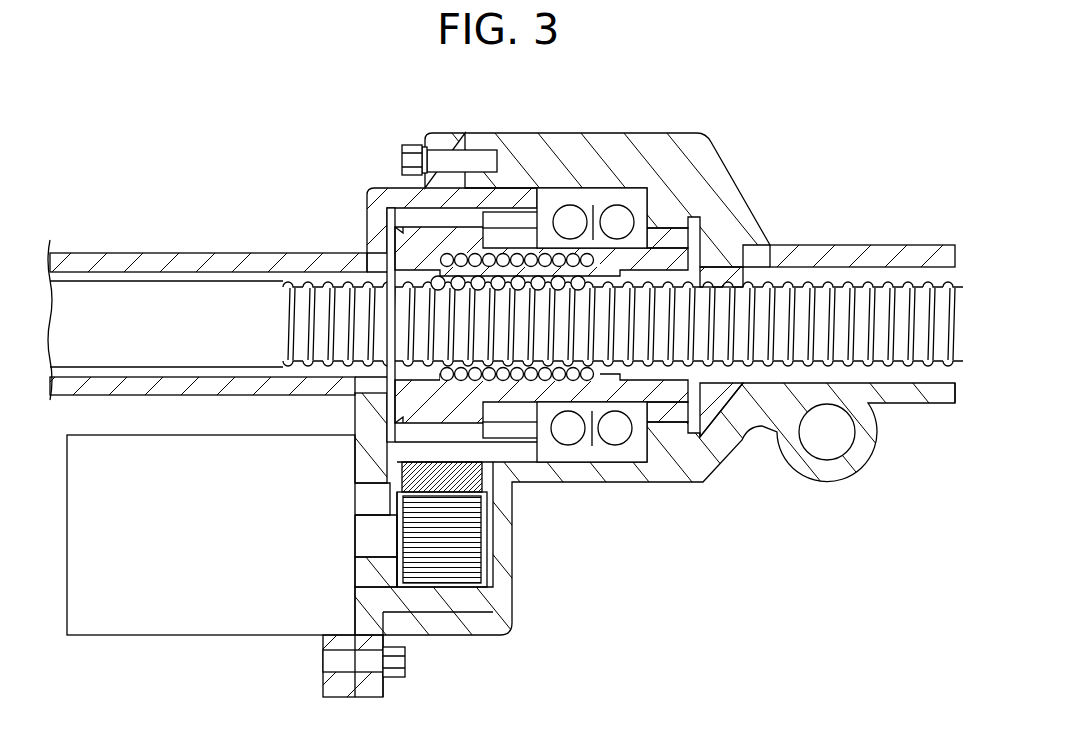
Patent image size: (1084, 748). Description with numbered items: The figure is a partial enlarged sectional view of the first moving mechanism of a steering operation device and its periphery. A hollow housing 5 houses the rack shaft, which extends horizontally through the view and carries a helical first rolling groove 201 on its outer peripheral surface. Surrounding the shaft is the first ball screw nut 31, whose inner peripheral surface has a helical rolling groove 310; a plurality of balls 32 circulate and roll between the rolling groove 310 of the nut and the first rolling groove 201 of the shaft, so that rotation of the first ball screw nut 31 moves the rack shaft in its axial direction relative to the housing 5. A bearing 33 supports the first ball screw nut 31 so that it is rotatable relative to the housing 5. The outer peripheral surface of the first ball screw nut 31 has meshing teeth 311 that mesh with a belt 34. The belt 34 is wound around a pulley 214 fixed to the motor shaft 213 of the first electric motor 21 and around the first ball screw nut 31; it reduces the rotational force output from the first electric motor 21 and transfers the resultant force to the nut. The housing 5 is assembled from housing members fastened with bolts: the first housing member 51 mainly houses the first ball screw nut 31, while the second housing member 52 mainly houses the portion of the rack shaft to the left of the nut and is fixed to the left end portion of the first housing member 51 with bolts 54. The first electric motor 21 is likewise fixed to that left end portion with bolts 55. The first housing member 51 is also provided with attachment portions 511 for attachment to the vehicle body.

The housing 5 is at (855, 122).
The first electric motor 21 is at (168, 642).
The first rolling groove 201 is at (275, 283).
The motor shaft 213 is at (373, 543).
The pulley 214 is at (487, 532).
The first ball screw nut 31 is at (514, 213).
The rolling groove 310 is at (615, 352).
The meshing teeth 311 is at (422, 217).
The balls 32 is at (450, 347).
The bearing 33 is at (588, 190).
The belt 34 is at (480, 478).
The first housing member 51 is at (843, 244).
The attachment portion 511 is at (860, 462).
The second housing member 52 is at (160, 252).
The bolts 54 is at (410, 145).
The bolts 55 is at (396, 678).